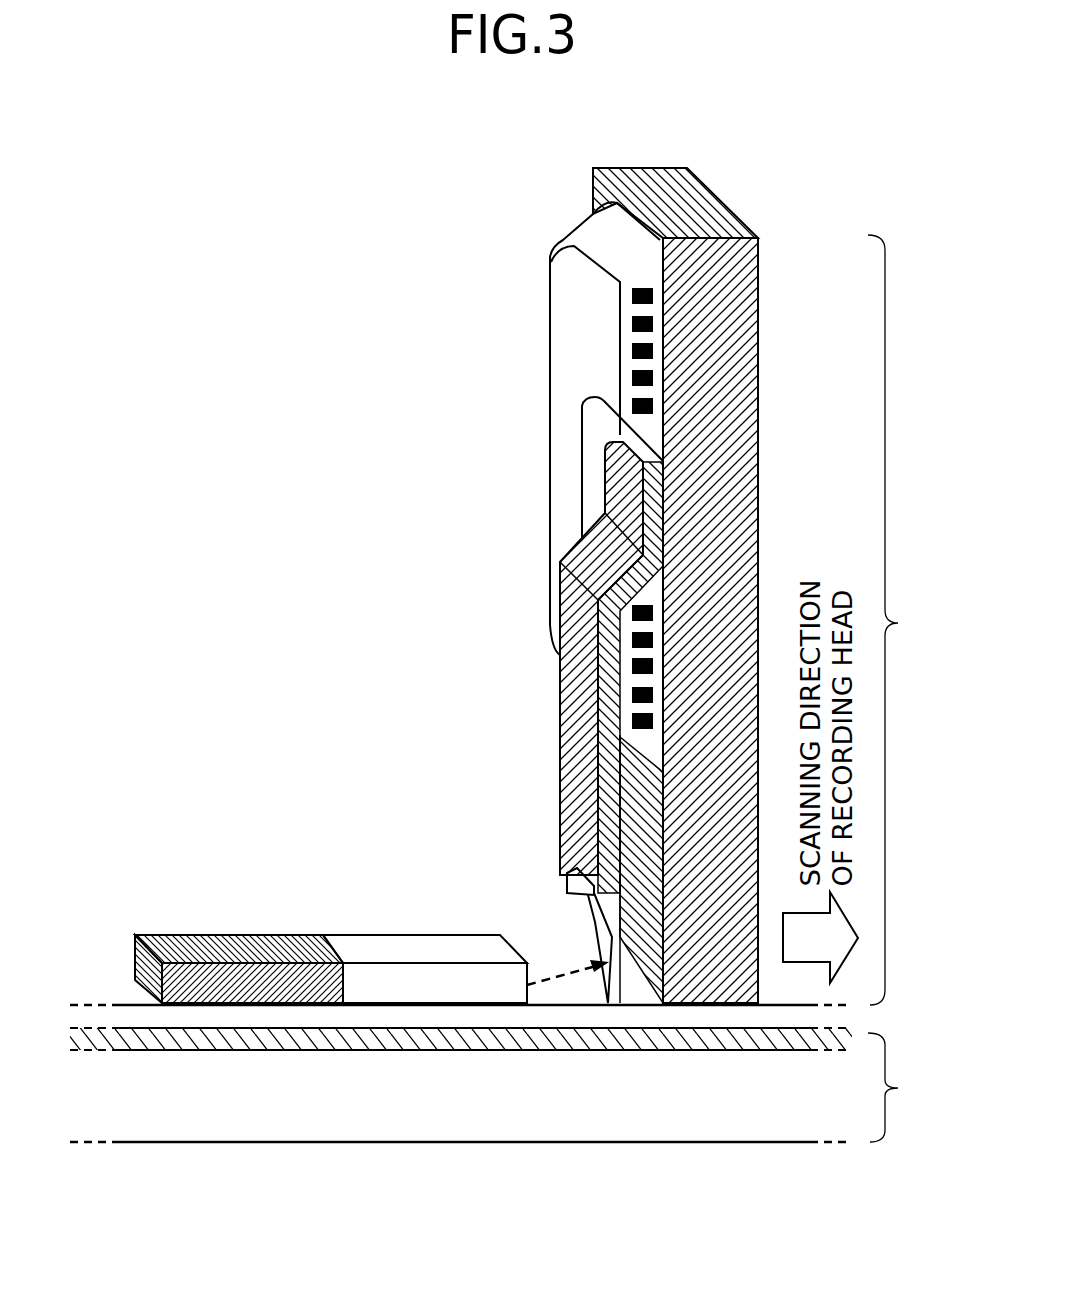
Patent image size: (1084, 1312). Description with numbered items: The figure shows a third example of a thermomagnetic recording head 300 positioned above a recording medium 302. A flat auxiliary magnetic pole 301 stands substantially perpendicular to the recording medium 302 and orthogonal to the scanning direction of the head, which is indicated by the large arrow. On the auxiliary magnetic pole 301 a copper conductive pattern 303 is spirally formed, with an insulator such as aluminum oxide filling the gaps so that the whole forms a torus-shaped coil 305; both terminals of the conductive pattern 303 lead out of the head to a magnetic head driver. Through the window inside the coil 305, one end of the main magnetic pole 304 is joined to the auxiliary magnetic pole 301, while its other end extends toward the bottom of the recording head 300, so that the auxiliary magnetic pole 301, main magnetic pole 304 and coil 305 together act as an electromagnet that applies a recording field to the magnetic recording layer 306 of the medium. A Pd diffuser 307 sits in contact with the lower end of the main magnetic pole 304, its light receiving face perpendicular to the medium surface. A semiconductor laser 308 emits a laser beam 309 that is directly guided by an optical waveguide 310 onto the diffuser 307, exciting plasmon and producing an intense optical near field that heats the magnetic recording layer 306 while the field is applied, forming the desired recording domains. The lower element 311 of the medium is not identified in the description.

The recording head 300 is at (912, 620).
The auxiliary magnetic pole 301 is at (742, 532).
The recording medium 302 is at (911, 1087).
The conductive pattern 303 is at (625, 368).
The main magnetic pole 304 is at (583, 703).
The coil 305 is at (572, 315).
The magnetic recording layer 306 is at (95, 1040).
The diffuser 307 is at (608, 1006).
The semiconductor laser 308 is at (240, 945).
The laser beam 309 is at (562, 972).
The optical waveguide 310 is at (415, 948).
The back surface of recording medium 311 is at (92, 1100).